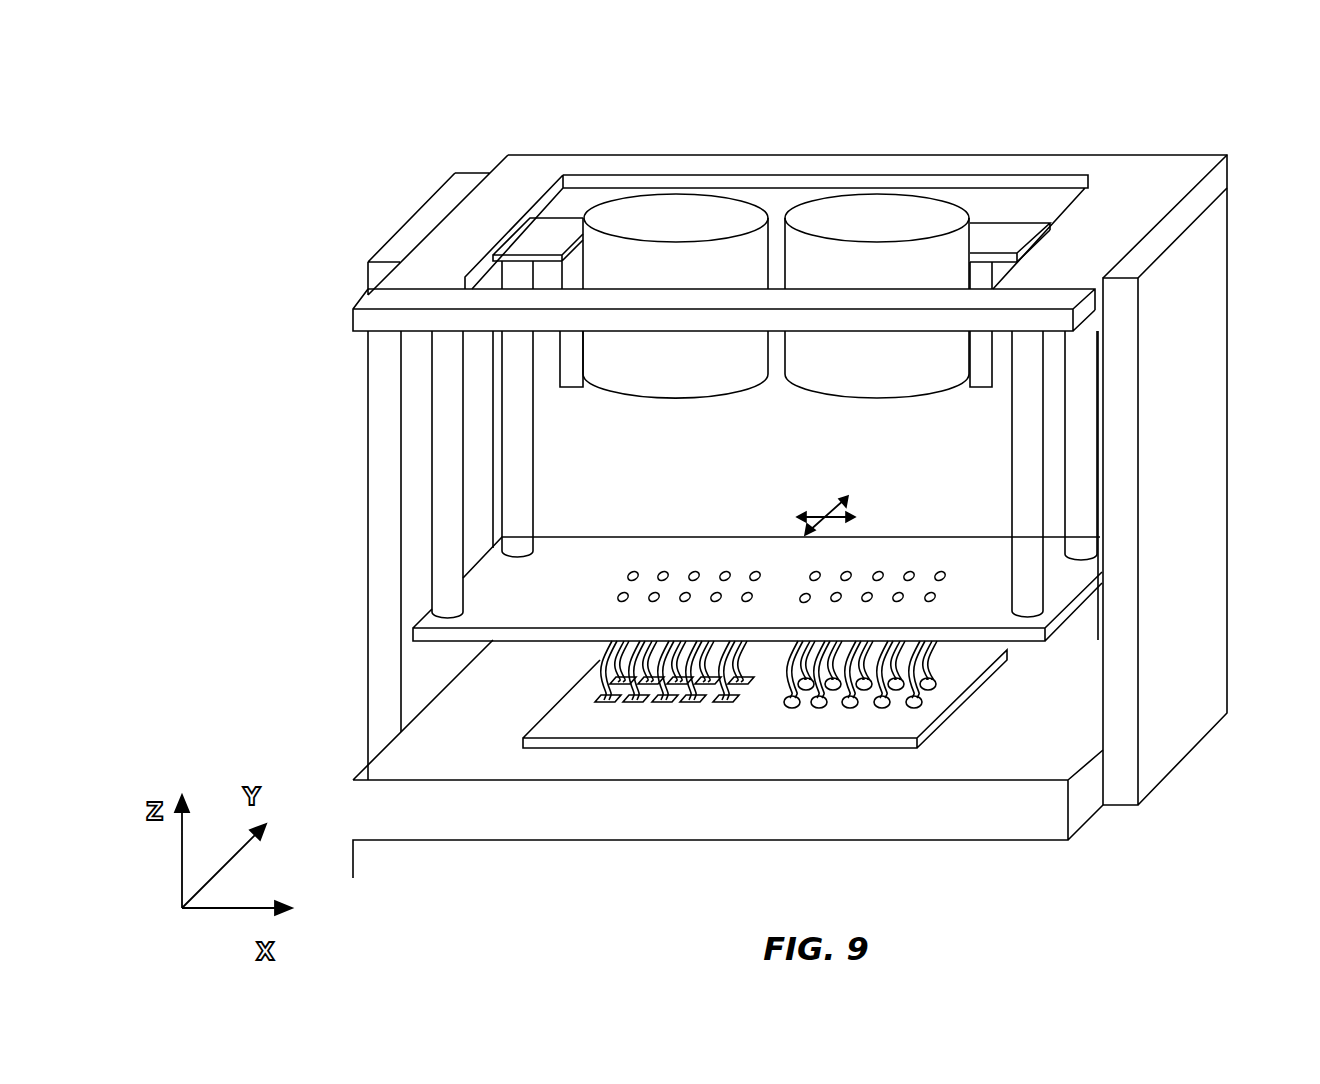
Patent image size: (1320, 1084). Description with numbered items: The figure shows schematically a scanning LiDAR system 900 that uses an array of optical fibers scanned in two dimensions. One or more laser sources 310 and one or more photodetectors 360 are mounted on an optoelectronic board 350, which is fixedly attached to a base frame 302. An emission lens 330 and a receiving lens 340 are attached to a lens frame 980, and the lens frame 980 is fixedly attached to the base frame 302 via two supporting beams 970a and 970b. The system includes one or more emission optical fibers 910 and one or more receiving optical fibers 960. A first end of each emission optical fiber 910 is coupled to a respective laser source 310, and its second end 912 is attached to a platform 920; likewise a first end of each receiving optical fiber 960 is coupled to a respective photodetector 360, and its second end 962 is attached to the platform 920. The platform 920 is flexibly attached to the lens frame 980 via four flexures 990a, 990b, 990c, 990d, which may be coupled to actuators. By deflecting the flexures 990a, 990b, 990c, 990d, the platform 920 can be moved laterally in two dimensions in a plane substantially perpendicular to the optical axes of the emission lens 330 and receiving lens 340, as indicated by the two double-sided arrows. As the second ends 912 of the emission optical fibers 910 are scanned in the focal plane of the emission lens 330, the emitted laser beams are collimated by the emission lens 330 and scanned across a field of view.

The scanning LiDAR system 900 is at (383, 105).
The lens frame 980 is at (1110, 180).
The receiving lens 340 is at (666, 212).
The emission lens 330 is at (870, 208).
The supporting beam 970a is at (1175, 738).
The supporting beam 970b is at (378, 597).
The base frame 302 is at (1035, 827).
The flexure 990a is at (1040, 505).
The flexure 990b is at (1080, 437).
The flexure 990c is at (530, 428).
The flexure 990d is at (443, 520).
The platform 920 is at (680, 560).
The second end of emission optical fiber 912 is at (803, 594).
The second end of receiving optical fiber 962 is at (618, 596).
The optoelectronic board 350 is at (967, 690).
The receiving optical fiber 960 is at (598, 655).
The photodetector 360 is at (600, 705).
The emission optical fiber 910 is at (757, 672).
The laser source 310 is at (790, 700).